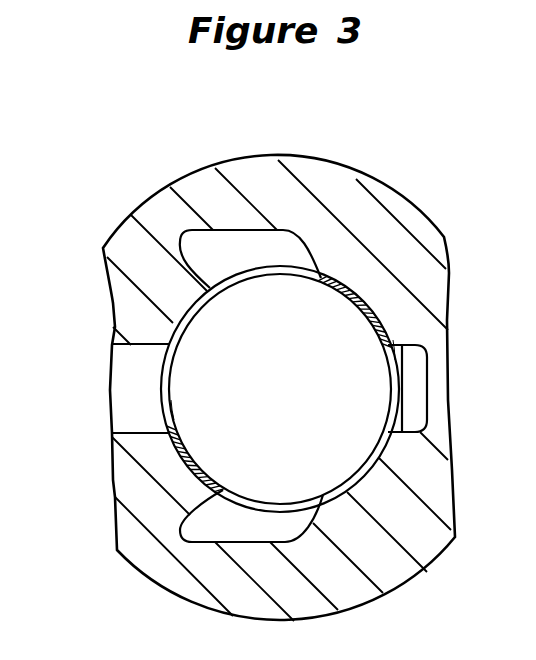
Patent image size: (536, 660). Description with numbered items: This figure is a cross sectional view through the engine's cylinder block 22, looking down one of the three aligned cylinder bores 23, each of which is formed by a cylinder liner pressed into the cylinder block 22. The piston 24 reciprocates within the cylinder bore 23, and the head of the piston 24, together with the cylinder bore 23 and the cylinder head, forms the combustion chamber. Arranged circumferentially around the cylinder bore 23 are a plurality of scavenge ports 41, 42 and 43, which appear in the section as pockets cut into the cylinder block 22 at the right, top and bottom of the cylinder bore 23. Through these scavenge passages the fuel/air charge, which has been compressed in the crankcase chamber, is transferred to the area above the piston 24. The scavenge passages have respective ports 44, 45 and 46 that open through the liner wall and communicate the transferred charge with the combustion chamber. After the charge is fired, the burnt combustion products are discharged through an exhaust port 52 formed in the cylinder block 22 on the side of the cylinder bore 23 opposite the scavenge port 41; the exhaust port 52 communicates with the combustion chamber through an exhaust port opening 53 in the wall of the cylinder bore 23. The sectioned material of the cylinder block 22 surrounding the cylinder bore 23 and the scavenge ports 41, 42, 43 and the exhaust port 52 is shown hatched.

The cylinder block 22 is at (403, 232).
The cylinder bore 23 is at (186, 319).
The piston 24 is at (312, 418).
The scavenge port 41 is at (447, 386).
The scavenge port 42 is at (240, 243).
The scavenge port 43 is at (250, 531).
The port 44 is at (387, 352).
The port 45 is at (306, 277).
The port 46 is at (225, 492).
The exhaust port 52 is at (124, 412).
The exhaust port opening 53 is at (172, 412).